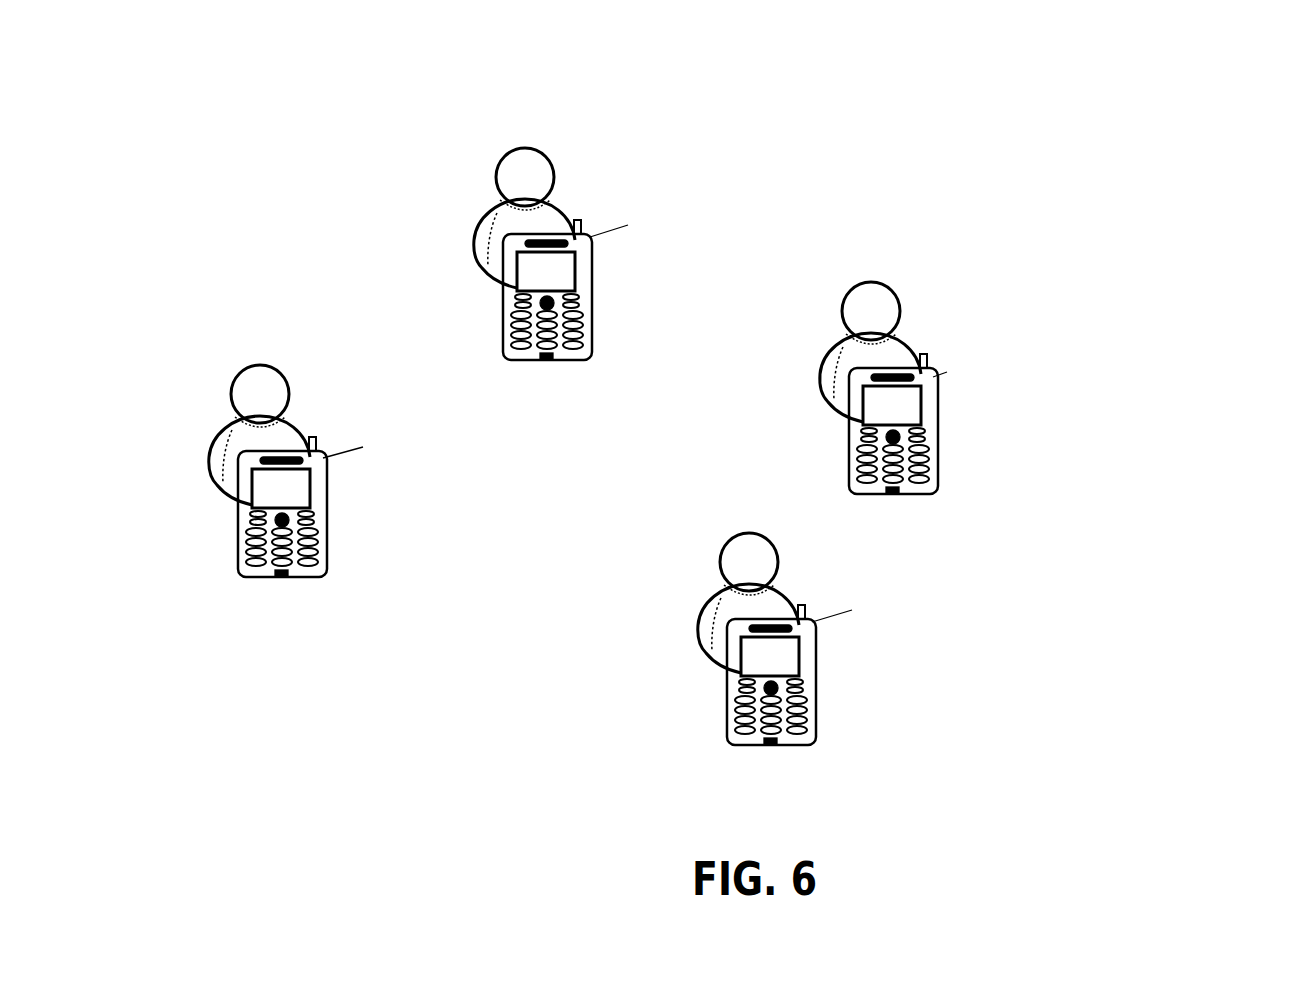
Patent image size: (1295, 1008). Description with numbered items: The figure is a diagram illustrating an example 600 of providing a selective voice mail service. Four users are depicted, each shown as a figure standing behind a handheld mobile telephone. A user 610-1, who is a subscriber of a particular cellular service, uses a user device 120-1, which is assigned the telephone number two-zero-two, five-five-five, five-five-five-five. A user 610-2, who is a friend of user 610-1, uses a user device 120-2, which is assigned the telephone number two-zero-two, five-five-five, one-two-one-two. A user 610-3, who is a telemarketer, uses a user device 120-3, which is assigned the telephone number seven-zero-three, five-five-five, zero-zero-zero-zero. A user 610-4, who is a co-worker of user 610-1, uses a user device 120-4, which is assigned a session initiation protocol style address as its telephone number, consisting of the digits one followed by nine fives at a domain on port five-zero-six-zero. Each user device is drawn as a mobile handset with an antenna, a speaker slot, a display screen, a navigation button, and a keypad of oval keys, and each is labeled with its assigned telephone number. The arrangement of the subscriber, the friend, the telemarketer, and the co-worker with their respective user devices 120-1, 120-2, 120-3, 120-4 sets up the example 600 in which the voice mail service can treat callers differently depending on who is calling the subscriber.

The example 600 is at (220, 48).
The user 610-1 is at (475, 242).
The user 610-2 is at (701, 603).
The user 610-3 is at (212, 435).
The user 610-4 is at (823, 352).
The user device 120-1 is at (593, 308).
The user device 120-2 is at (811, 675).
The user device 120-3 is at (322, 507).
The user device 120-4 is at (933, 424).